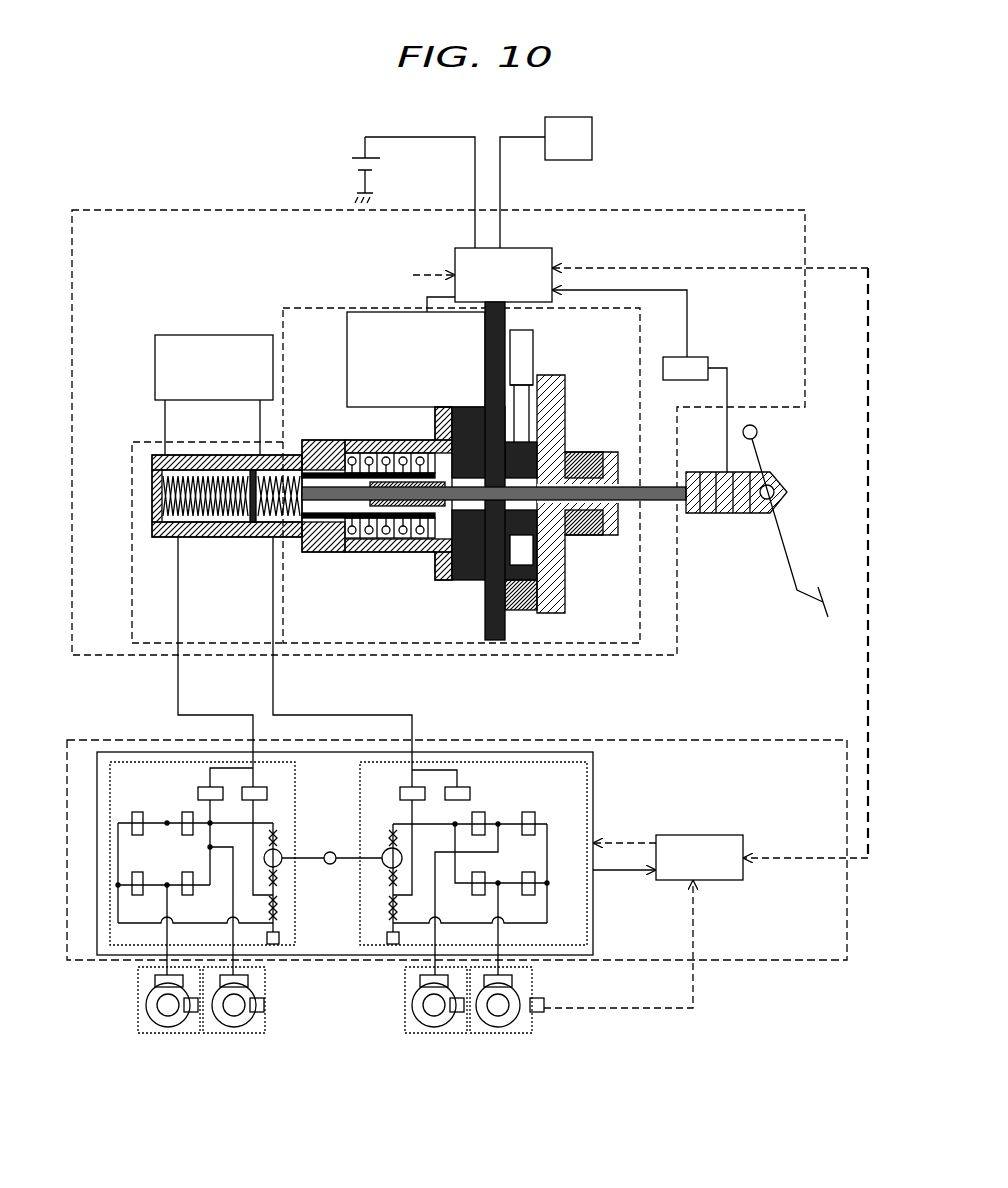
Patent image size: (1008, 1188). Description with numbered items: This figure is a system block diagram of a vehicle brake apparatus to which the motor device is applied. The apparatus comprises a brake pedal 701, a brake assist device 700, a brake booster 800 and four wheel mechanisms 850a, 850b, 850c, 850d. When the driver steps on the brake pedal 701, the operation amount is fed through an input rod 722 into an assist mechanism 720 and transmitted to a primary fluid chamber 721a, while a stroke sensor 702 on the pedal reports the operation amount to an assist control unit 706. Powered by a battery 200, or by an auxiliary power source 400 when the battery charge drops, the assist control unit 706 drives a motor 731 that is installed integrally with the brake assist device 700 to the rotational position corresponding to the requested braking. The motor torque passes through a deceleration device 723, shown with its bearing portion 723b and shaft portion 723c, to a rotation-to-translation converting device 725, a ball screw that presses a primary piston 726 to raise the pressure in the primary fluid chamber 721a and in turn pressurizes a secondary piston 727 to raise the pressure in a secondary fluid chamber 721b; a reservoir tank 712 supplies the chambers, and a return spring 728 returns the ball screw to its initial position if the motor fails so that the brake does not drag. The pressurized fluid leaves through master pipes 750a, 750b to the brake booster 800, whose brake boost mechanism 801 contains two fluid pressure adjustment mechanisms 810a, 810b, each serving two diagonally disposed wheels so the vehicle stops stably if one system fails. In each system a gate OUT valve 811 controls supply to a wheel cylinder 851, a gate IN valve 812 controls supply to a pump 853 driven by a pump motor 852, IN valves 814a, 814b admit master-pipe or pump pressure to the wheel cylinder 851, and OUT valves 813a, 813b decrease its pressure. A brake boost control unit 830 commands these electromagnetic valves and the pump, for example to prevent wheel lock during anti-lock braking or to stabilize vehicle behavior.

The brake assist device 700 is at (233, 186).
The battery 200 is at (355, 168).
The auxiliary power source 400 is at (583, 150).
The assist control unit 706 is at (570, 244).
The stroke sensor 702 is at (700, 358).
The assist mechanism 720 is at (331, 288).
The motor 731 is at (367, 318).
The reservoir tank 712 is at (200, 335).
The primary fluid chamber 721a is at (286, 452).
The secondary fluid chamber 721b is at (155, 453).
The secondary piston 727 is at (243, 538).
The primary piston 726 is at (325, 540).
The return spring 728 is at (396, 553).
The rotation-to-translation converting device 725 is at (485, 577).
The deceleration device 723 is at (534, 340).
The rotor bearing 723b is at (566, 406).
The rotor shaft 723c is at (492, 640).
The input rod 722 is at (628, 485).
The brake pedal 701 is at (792, 555).
The master pipe 750a is at (276, 690).
The master pipe 750b is at (181, 690).
The brake booster 800 is at (715, 707).
The brake boost mechanism 801 is at (550, 752).
The fluid pressure adjustment mechanism 810a is at (647, 733).
The fluid pressure adjustment mechanism 810b is at (148, 722).
The gate OUT valve 811 is at (472, 790).
The gate IN valve 812 is at (401, 789).
The OUT valve 813a is at (535, 815).
The OUT valve 813b is at (535, 871).
The IN valve 814a is at (480, 813).
The IN valve 814b is at (498, 885).
The brake boost control unit 830 is at (692, 850).
The wheel mechanism 850a is at (478, 1036).
The wheel mechanism 850b is at (407, 1035).
The wheel mechanism 850c is at (255, 1034).
The wheel mechanism 850d is at (183, 1034).
The wheel cylinder 851 is at (508, 982).
The pump motor 852 is at (333, 865).
The pump 853 is at (384, 852).